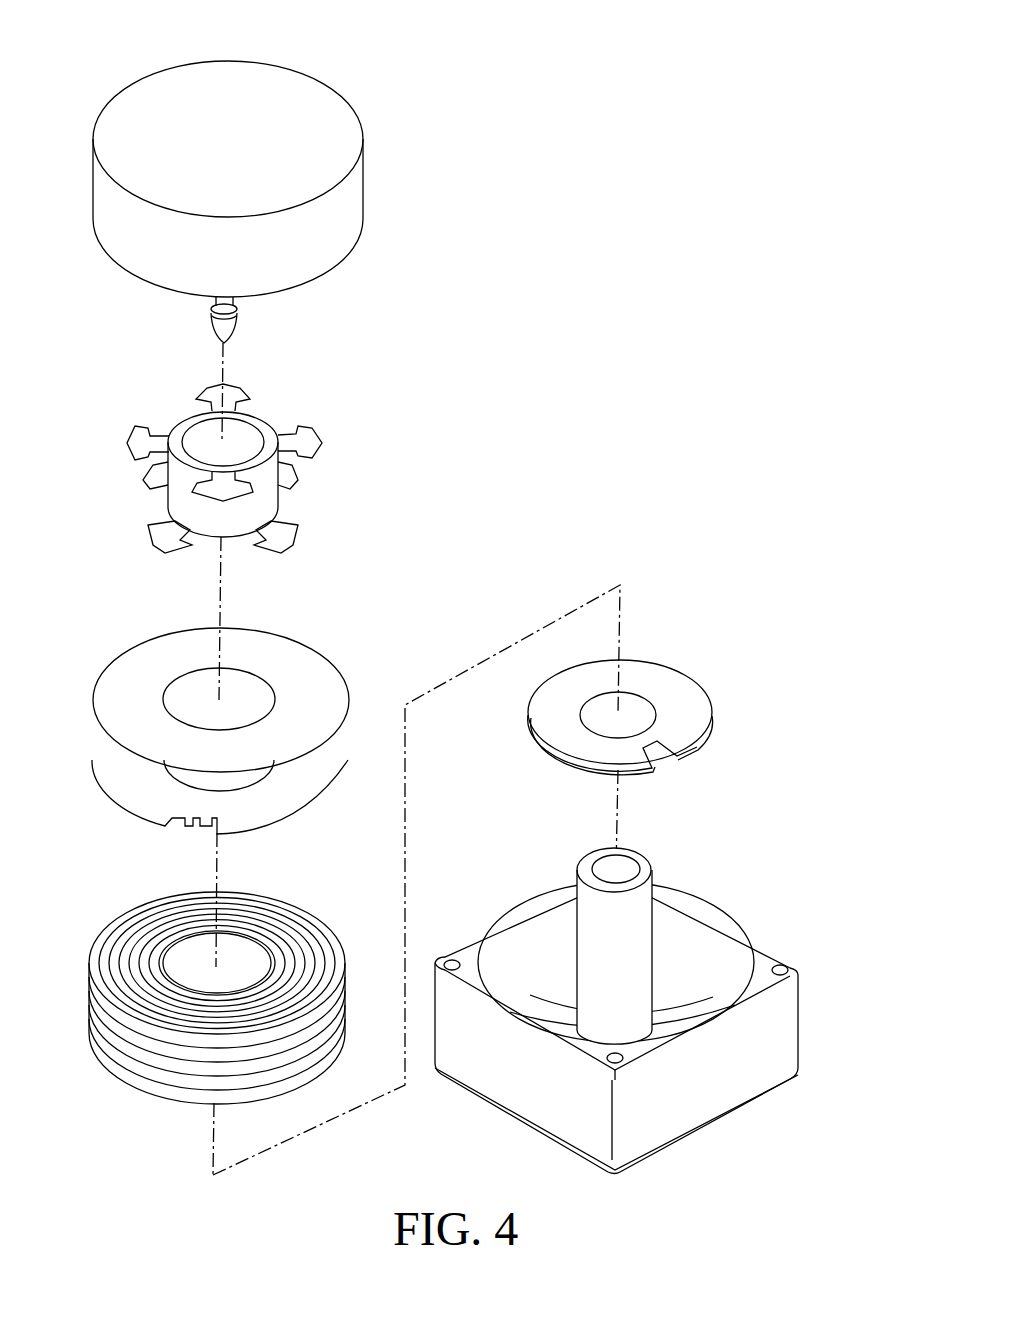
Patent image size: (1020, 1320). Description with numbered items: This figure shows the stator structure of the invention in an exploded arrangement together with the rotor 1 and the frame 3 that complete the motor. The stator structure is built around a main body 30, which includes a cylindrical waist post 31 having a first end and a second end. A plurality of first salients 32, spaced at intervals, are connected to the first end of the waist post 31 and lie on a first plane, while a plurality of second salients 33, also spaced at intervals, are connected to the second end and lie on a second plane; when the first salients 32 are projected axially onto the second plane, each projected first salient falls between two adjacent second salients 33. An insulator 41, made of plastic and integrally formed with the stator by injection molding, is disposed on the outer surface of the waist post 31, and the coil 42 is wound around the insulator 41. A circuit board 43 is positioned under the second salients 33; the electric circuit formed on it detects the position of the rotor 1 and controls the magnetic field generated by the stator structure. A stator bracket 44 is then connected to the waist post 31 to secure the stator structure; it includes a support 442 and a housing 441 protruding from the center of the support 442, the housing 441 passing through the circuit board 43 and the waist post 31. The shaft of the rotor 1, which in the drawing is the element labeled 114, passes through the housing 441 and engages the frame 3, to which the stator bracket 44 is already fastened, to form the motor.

The rotor 1 is at (157, 47).
The shaft 114 is at (221, 334).
The main body 30 is at (213, 459).
The cylindrical waist post 31 is at (268, 507).
The first salients 32 is at (128, 445).
The second salients 33 is at (146, 527).
The insulator 41 is at (150, 622).
The coil 42 is at (148, 885).
The circuit board 43 is at (710, 711).
The stator bracket 44 is at (690, 946).
The housing 441 is at (640, 950).
The support 442 is at (673, 1027).
The frame 3 is at (669, 1011).